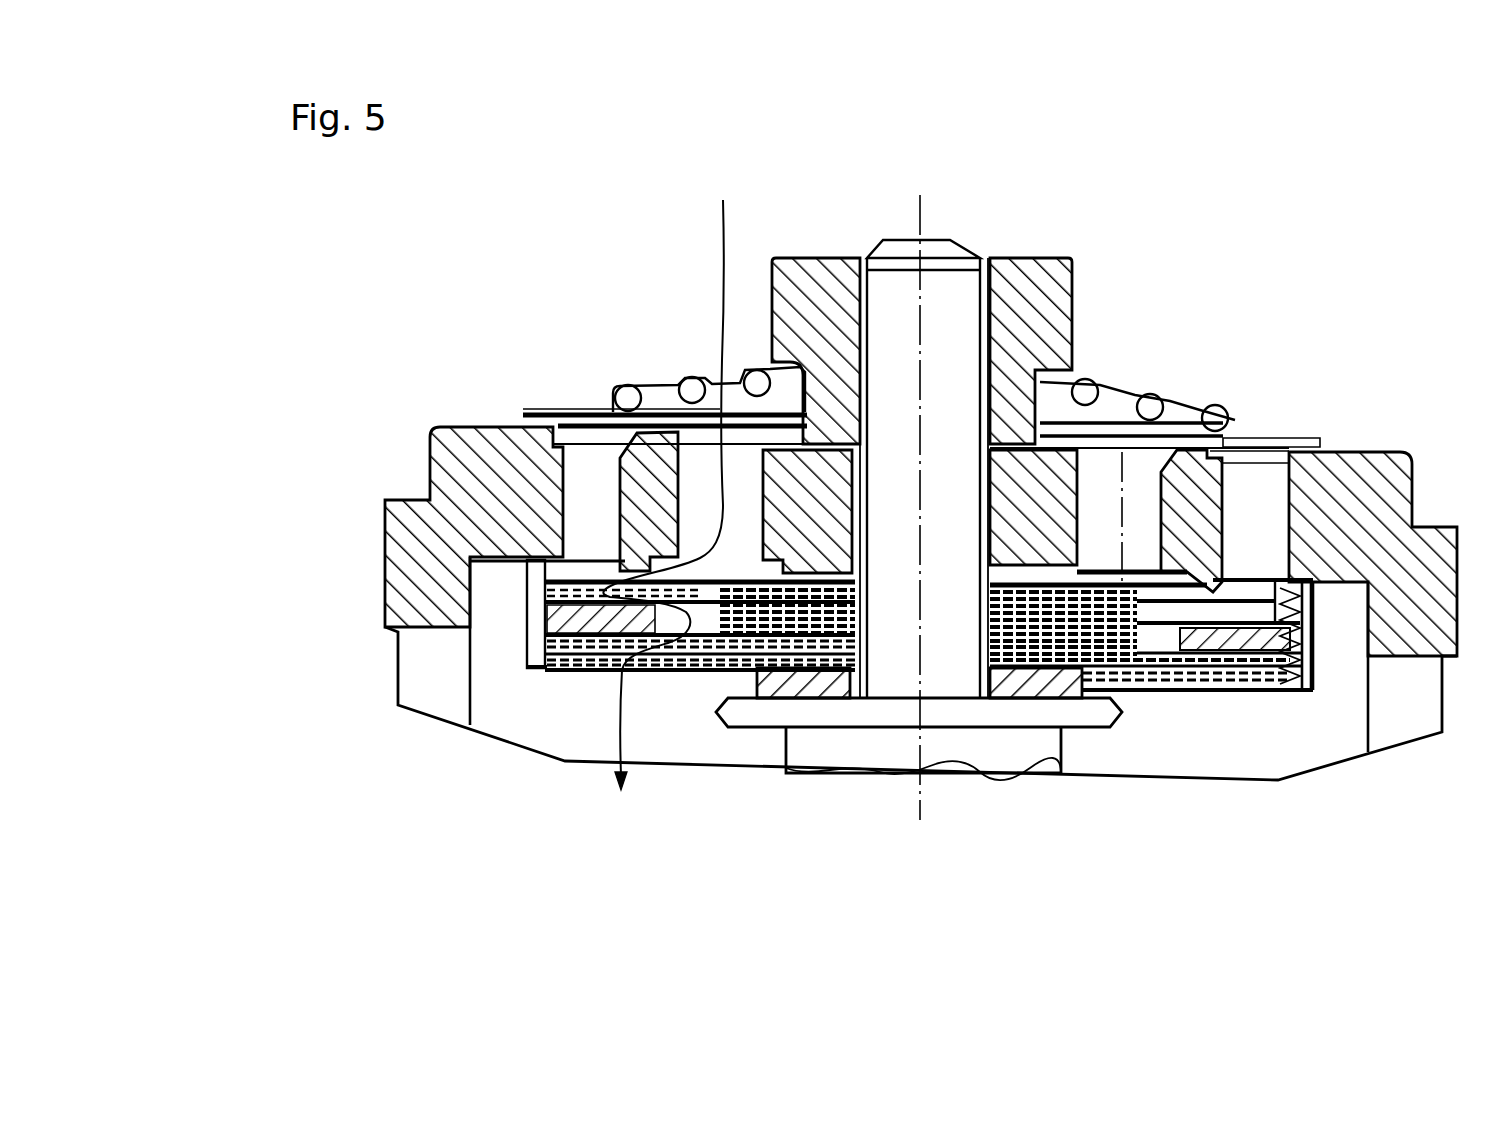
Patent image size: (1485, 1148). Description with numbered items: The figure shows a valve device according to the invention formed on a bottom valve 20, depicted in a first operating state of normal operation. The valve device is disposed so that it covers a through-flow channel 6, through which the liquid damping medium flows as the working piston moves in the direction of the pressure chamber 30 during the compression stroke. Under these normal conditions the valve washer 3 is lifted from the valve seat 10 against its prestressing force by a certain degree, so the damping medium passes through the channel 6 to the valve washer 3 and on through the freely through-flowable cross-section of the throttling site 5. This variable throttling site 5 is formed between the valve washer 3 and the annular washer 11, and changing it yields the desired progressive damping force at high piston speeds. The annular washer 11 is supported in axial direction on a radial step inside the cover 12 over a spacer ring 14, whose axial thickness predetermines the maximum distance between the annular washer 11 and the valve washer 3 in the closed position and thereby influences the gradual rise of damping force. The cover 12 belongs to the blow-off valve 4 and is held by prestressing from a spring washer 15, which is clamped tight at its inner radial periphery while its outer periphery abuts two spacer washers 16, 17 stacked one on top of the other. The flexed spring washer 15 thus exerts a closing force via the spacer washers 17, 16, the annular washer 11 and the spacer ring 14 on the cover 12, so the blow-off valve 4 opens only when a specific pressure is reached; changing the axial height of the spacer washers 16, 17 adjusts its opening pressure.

The valve washer 3 is at (580, 587).
The blow-off valve 4 is at (571, 718).
The throttling site 5 is at (558, 672).
The through-flow channel 6 is at (707, 477).
The valve seat 10 is at (635, 572).
The annular washer 11 is at (580, 618).
The cover 12 is at (1315, 663).
The spacer ring 14 is at (573, 600).
The spring washer 15 is at (688, 670).
The spacer washer 16 is at (580, 640).
The spacer washer 17 is at (580, 658).
The bottom valve 20 is at (443, 323).
The pressure chamber 30 is at (1206, 202).